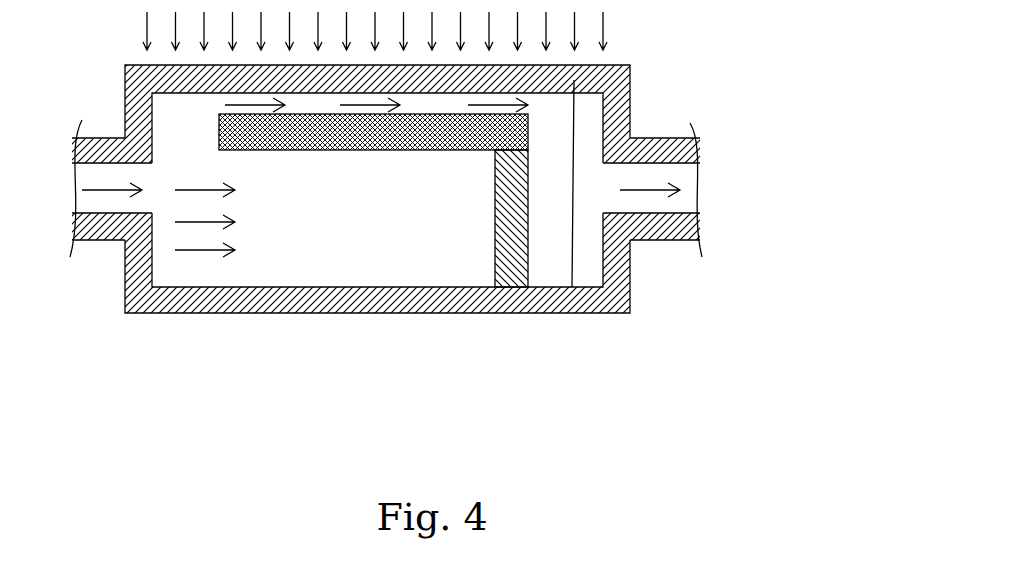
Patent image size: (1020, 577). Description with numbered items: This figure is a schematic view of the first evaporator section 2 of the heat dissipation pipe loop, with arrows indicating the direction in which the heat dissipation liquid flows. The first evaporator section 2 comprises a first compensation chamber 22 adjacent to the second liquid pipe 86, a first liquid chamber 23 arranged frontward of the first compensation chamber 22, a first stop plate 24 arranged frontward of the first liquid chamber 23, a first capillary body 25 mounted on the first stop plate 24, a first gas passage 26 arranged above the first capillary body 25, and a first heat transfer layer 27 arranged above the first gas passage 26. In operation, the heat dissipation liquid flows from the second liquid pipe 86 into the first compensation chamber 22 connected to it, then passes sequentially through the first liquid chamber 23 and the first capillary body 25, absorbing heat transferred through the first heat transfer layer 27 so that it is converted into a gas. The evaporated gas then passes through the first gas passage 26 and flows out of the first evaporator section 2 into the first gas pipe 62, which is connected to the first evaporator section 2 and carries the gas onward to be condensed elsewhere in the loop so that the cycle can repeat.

The first evaporator section 2 is at (620, 290).
The second liquid pipe 86 is at (100, 150).
The first gas pipe 62 is at (673, 148).
The first compensation chamber 22 is at (163, 172).
The first liquid chamber 23 is at (372, 197).
The first stop plate 24 is at (512, 210).
The first capillary body 25 is at (245, 118).
The first gas passage 26 is at (320, 107).
The first heat transfer layer 27 is at (572, 287).